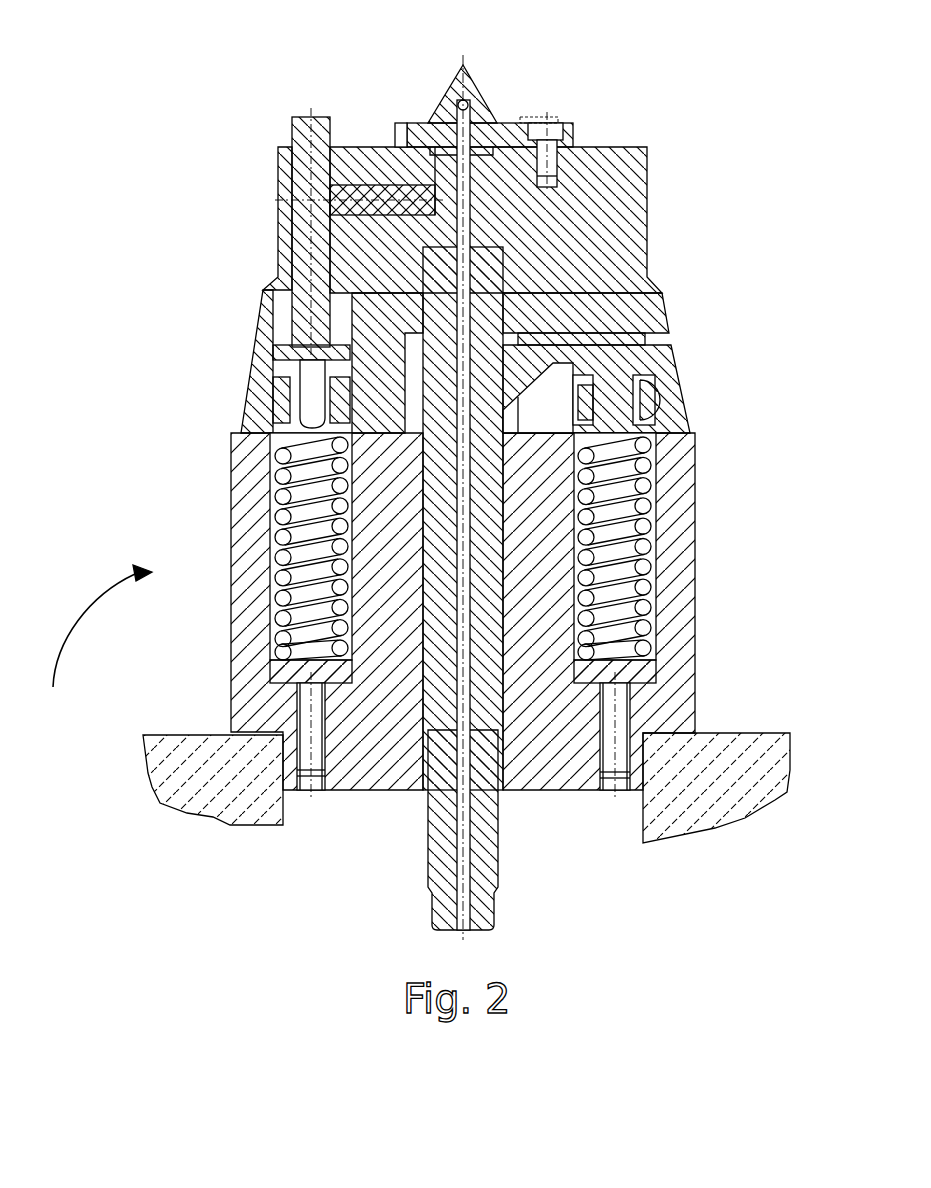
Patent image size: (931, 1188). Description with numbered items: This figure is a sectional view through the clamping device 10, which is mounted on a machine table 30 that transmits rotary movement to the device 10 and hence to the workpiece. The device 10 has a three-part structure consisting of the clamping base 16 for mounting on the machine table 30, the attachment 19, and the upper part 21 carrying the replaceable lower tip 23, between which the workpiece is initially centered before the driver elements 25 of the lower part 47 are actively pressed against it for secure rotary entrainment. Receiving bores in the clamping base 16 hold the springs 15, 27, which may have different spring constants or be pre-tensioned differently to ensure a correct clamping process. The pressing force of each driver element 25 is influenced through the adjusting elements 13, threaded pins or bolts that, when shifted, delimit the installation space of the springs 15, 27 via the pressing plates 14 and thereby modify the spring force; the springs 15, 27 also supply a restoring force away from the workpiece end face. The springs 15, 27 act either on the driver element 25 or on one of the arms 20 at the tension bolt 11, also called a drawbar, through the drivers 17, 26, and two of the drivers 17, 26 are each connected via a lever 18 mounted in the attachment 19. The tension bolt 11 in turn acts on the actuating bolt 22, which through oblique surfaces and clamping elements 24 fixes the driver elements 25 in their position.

The device 10 is at (752, 462).
The tension bolt 11 is at (492, 913).
The adjusting elements 13 is at (313, 770).
The pressing plates 14 is at (290, 676).
The spring 15 is at (640, 585).
The clamping base 16 is at (683, 535).
The driver 17 is at (638, 369).
The lever 18 is at (282, 400).
The attachment 19 is at (640, 318).
The arms 20 is at (595, 347).
The upper part 21 is at (625, 238).
The actuating bolt 22 is at (470, 155).
The lower tip 23 is at (456, 100).
The clamping elements 24 is at (392, 200).
The driver element 25 is at (300, 131).
The driver 26 is at (300, 365).
The spring 27 is at (285, 478).
The machine table 30 is at (173, 788).
The lower part 47 is at (95, 645).